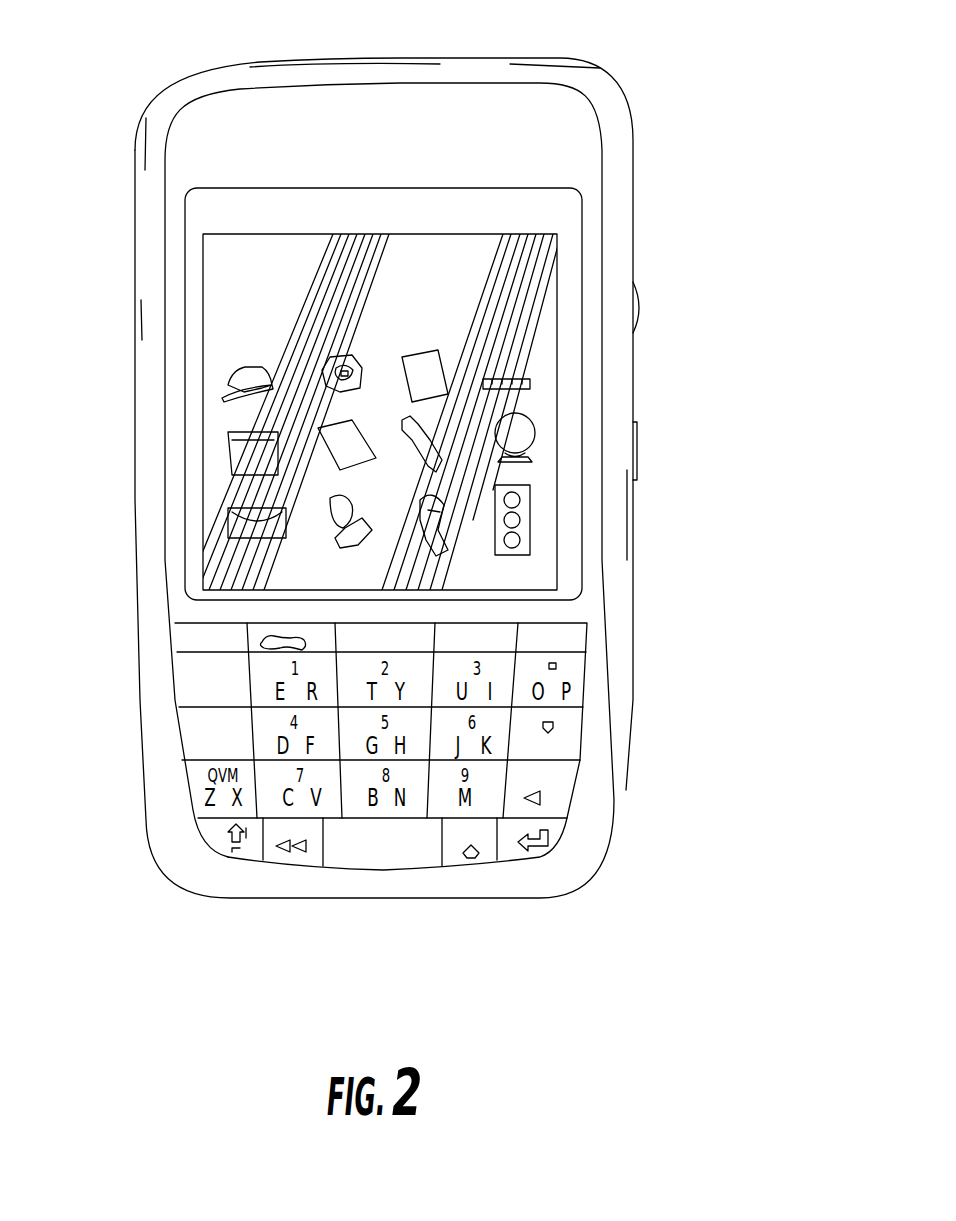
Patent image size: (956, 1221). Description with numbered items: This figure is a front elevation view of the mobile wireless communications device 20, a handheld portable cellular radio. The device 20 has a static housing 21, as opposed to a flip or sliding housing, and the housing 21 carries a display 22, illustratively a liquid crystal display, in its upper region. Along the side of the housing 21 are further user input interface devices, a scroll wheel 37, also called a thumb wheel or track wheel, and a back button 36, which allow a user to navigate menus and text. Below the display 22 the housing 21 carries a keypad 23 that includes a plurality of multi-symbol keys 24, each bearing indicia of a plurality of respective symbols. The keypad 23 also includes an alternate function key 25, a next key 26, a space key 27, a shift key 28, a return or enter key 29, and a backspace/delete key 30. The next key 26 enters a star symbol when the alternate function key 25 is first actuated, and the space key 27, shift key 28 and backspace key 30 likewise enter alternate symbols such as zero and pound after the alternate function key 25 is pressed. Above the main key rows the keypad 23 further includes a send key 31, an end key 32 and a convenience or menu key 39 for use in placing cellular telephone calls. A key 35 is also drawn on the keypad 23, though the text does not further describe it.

The mobile wireless communications device 20 is at (688, 56).
The housing 21 is at (185, 92).
The display 22 is at (215, 333).
The keypad 23 is at (610, 675).
The multi-symbol keys 24 is at (200, 732).
The alternate function key 25 is at (220, 838).
The next key 26 is at (265, 862).
The space key 27 is at (345, 862).
The shift key 28 is at (480, 860).
The return key 29 is at (540, 830).
The backspace/delete key 30 is at (562, 786).
The send key 31 is at (262, 645).
The end key 32 is at (488, 655).
The key with indicia 35 is at (572, 735).
The back button 36 is at (637, 442).
The scroll wheel 37 is at (643, 303).
The convenience key 39 is at (410, 655).